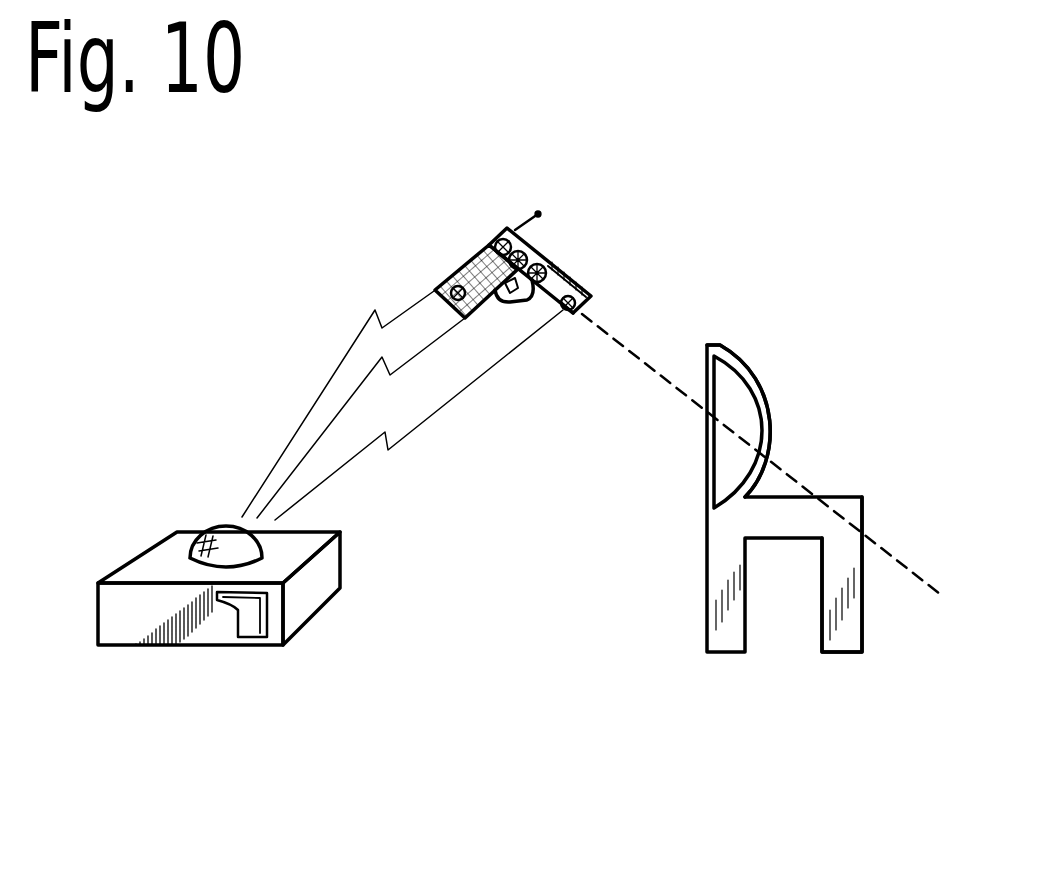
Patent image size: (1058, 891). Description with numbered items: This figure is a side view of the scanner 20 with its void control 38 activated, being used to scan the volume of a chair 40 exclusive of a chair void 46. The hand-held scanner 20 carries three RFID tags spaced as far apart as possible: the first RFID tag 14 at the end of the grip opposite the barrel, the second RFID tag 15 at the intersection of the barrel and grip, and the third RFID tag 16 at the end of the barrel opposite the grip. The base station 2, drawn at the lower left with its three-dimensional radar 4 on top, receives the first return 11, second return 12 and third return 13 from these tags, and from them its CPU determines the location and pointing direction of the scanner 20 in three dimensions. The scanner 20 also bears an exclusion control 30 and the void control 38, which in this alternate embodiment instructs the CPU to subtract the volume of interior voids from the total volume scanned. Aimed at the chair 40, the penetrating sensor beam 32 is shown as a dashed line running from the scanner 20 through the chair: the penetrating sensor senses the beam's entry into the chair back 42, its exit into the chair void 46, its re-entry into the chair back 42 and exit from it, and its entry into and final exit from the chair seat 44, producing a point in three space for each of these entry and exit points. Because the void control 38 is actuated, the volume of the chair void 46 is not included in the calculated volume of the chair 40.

The base station 2 is at (120, 644).
The 3-D radar 4 is at (263, 533).
The first return 11 is at (345, 407).
The second return 12 is at (357, 339).
The third return 13 is at (442, 413).
The first RFID tag 14 is at (448, 315).
The second RFID tag 15 is at (495, 240).
The third RFID tag 16 is at (570, 318).
The scanner 20 is at (464, 264).
The exclusion control 30 is at (533, 248).
The penetrating sensor beam 32 is at (641, 362).
The void control 38 is at (562, 266).
The chair 40 is at (728, 523).
The chair back 42 is at (704, 372).
The chair seat 44 is at (798, 513).
The chair void 46 is at (737, 402).